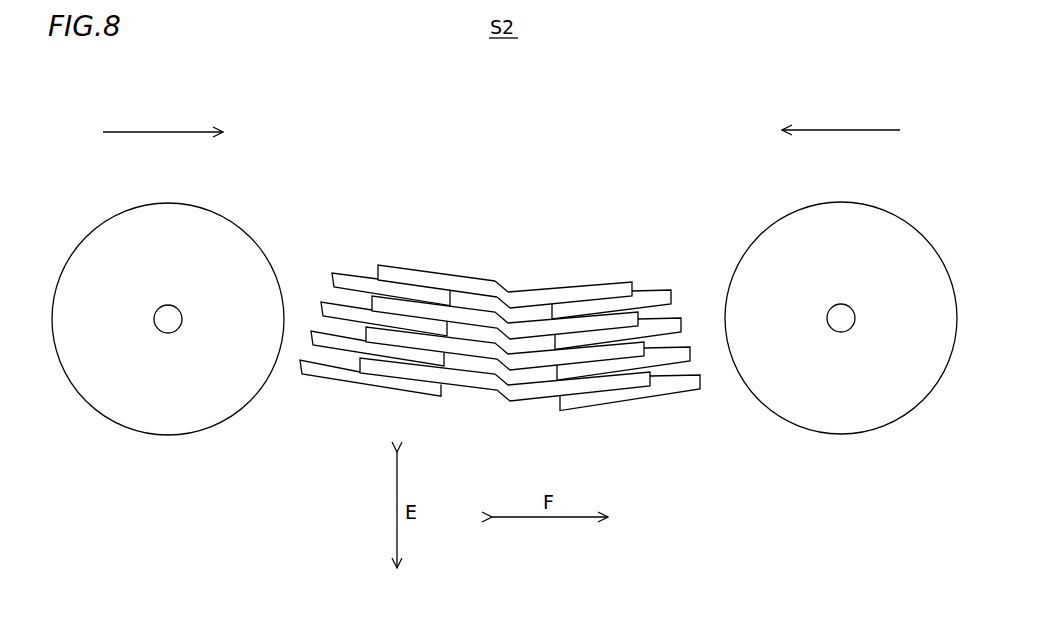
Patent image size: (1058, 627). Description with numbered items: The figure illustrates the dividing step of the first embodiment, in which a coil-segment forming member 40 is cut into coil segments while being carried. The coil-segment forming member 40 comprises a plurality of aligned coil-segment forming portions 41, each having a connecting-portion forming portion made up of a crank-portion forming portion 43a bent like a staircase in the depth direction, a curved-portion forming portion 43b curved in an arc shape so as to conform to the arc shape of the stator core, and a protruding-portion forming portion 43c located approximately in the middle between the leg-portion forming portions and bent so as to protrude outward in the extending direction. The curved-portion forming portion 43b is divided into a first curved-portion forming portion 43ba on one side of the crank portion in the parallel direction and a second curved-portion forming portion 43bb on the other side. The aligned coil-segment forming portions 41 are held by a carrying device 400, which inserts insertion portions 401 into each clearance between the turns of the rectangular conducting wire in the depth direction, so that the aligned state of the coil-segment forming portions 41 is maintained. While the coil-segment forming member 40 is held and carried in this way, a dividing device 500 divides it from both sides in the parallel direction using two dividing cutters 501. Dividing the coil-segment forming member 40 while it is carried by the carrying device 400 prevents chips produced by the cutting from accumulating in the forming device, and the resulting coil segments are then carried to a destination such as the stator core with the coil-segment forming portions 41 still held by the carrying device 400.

The coil-segment forming member 40 is at (496, 333).
The coil-segment forming portion 41 is at (505, 293).
The crank-portion forming portion 43a is at (504, 248).
The curved-portion forming portion 43b is at (505, 247).
The protruding-portion forming portion 43c is at (512, 280).
The first curved-portion forming portion 43ba is at (578, 279).
The second curved-portion forming portion 43bb is at (449, 268).
The carrying device 400 is at (358, 398).
The insertion portion 401 is at (496, 339).
The dividing device 500 is at (120, 197).
The dividing cutter 501 is at (160, 408).